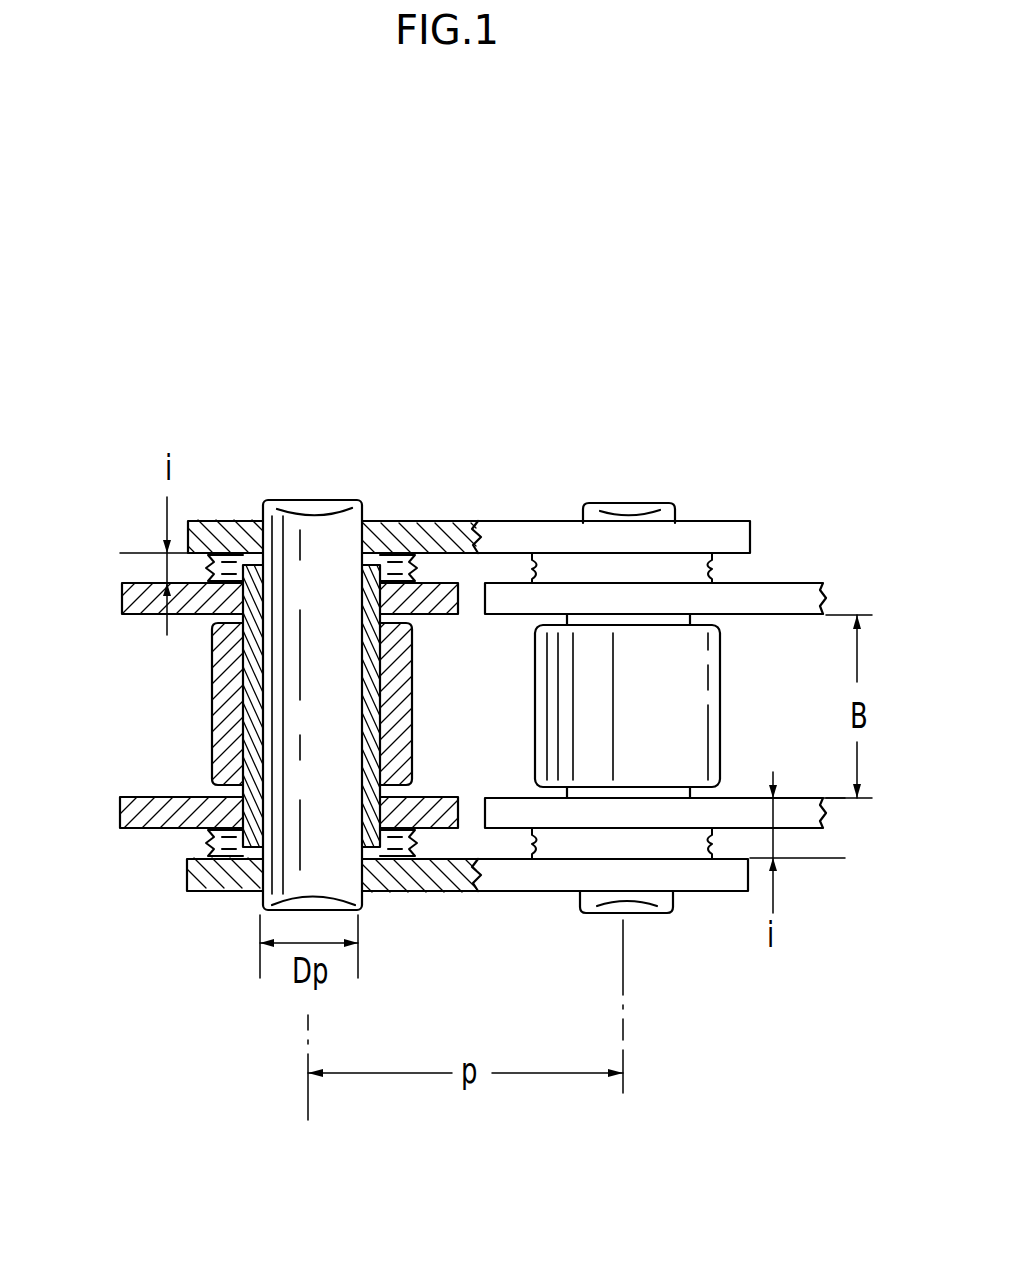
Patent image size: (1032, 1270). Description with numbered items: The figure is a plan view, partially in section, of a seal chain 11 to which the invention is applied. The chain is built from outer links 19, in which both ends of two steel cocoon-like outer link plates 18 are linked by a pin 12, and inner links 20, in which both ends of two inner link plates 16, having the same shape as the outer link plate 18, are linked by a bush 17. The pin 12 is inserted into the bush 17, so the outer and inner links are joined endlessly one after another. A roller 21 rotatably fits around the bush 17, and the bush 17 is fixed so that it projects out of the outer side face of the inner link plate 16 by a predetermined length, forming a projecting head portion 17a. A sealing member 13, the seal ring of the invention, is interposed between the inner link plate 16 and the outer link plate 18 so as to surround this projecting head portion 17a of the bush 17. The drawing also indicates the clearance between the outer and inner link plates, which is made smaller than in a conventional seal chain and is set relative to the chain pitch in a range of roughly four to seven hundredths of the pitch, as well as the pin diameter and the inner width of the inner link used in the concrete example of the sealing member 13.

The seal chain 11 is at (612, 380).
The pin 12 is at (298, 502).
The sealing member 13 is at (425, 520).
The inner link plate 16 is at (122, 601).
The bush 17 is at (372, 747).
The projecting head portion 17a is at (373, 512).
The outer link plate 18 is at (550, 520).
The outer link 19 is at (477, 498).
The inner link 20 is at (774, 500).
The roller 21 is at (212, 697).